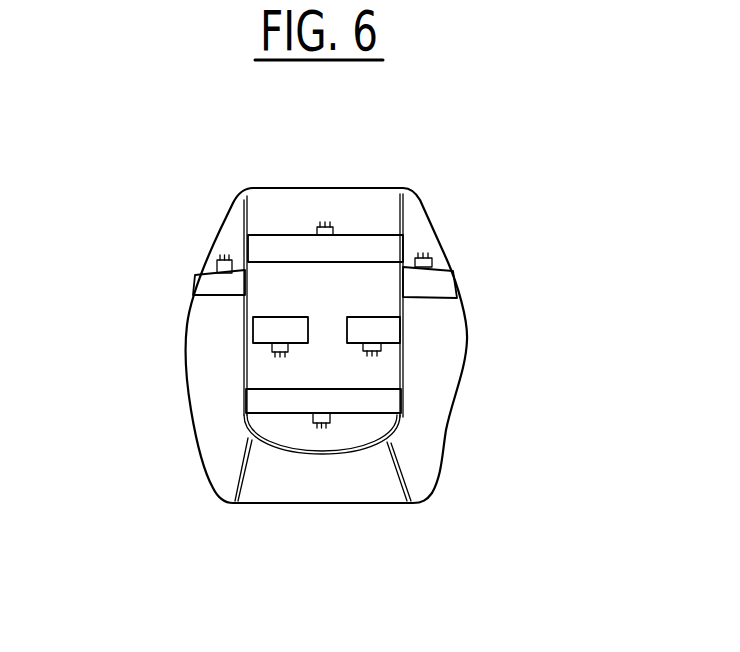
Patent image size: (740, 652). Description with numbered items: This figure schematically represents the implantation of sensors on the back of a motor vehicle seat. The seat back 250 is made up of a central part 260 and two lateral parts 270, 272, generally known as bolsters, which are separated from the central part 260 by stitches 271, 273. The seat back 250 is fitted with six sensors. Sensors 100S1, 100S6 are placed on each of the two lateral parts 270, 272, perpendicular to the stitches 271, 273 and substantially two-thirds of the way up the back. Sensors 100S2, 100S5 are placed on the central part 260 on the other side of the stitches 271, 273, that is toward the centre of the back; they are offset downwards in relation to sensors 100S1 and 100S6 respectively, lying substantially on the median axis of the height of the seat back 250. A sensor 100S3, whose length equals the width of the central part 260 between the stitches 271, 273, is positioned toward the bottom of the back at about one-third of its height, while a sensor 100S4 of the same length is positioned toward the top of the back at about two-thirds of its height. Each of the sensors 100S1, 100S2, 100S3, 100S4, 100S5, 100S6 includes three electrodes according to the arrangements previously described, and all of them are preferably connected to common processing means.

The seat back 250 is at (176, 499).
The central part 260 is at (350, 435).
The lateral part 270 is at (197, 333).
The stitch 271 is at (248, 210).
The lateral part 272 is at (450, 375).
The stitch 273 is at (407, 368).
The sensor 100S1 is at (213, 288).
The sensor 100S2 is at (259, 330).
The sensor 100S3 is at (292, 402).
The sensor 100S4 is at (370, 243).
The sensor 100S5 is at (388, 330).
The sensor 100S6 is at (437, 280).